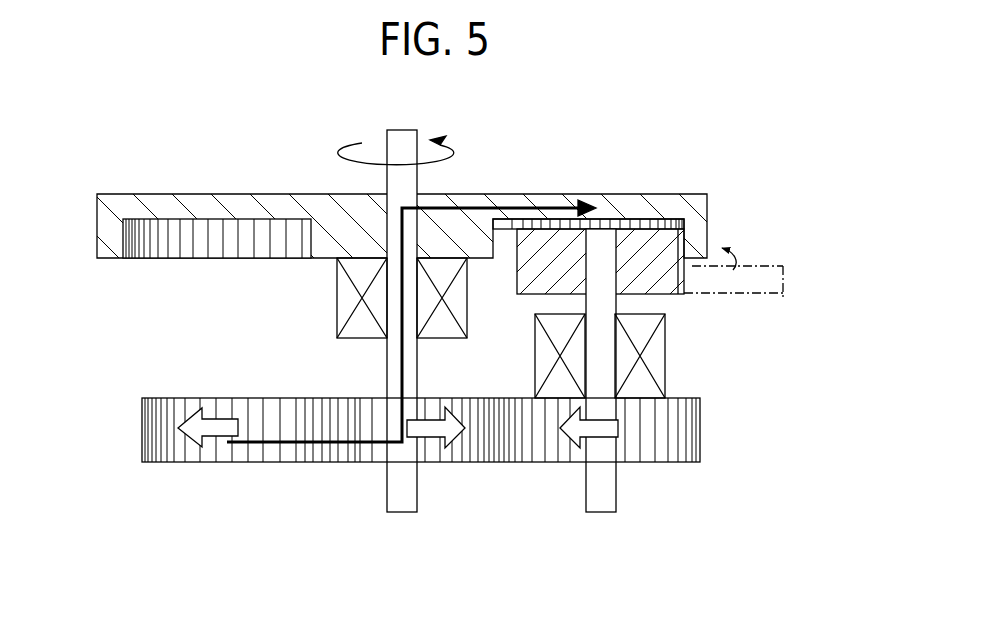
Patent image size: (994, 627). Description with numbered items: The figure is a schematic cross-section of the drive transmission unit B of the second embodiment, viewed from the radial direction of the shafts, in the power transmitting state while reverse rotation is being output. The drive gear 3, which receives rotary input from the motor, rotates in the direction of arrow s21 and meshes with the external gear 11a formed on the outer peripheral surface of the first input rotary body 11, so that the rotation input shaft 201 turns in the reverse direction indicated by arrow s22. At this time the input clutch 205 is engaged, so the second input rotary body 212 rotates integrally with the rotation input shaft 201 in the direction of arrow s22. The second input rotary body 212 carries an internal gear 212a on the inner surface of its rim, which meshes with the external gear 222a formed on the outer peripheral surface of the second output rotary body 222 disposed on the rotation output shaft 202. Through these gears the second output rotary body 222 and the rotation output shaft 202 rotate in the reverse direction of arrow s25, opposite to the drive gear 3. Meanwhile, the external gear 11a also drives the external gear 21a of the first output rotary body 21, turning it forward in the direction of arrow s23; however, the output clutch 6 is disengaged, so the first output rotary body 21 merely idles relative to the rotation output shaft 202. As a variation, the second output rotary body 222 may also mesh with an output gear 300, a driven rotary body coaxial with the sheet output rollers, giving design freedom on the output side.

The second input rotary body 212 is at (232, 190).
The internal gear 212a is at (133, 238).
The external gear 222a is at (685, 232).
The second output rotary body 222 is at (672, 293).
The rotation input shaft 201 is at (402, 516).
The rotation output shaft 202 is at (600, 516).
The input clutch 205 is at (337, 298).
The output clutch 6 is at (668, 350).
The output gear 300 is at (771, 297).
The drive gear 3 is at (140, 438).
The first output rotary body 21 is at (662, 465).
The external gear 21a is at (683, 432).
The first input rotary body 11 is at (324, 465).
The external gear 11a is at (355, 463).
The arrow indicating rotation direction of drive gear s21 is at (204, 430).
The arrow indicating reverse rotation direction s22 is at (452, 438).
The arrow indicating forward rotation direction s23 is at (610, 437).
The arrow indicating reverse rotation direction of output s25 is at (730, 258).
The drive transmission unit B is at (613, 164).